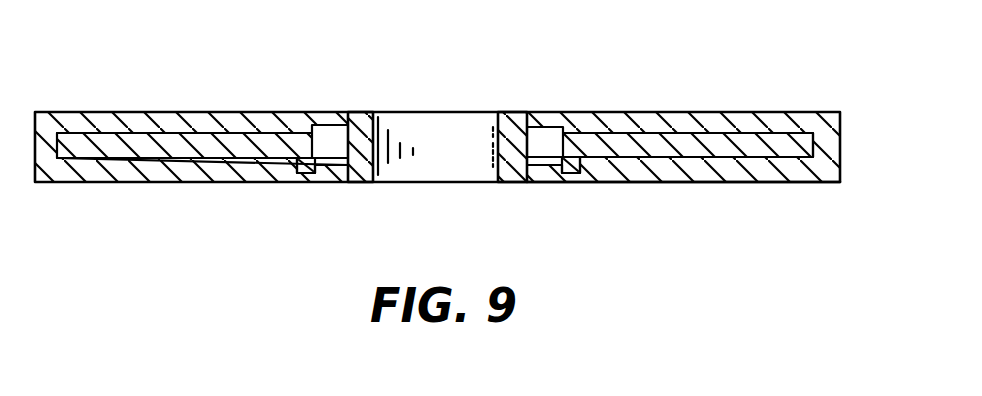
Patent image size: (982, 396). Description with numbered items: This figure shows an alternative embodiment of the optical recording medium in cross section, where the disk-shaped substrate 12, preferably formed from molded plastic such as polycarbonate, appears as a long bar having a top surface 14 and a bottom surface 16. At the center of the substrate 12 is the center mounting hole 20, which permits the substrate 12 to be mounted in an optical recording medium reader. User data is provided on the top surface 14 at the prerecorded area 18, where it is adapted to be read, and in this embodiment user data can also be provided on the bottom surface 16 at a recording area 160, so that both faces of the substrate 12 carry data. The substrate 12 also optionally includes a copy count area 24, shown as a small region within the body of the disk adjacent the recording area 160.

The tape head assembly housing 12 is at (843, 138).
The housing body upper portion 14 is at (733, 113).
The housing body lower portion 16 is at (784, 182).
The slider member 18 is at (630, 126).
The central cavity 20 is at (427, 132).
The retaining pin 24 is at (569, 174).
The channel 160 is at (707, 160).